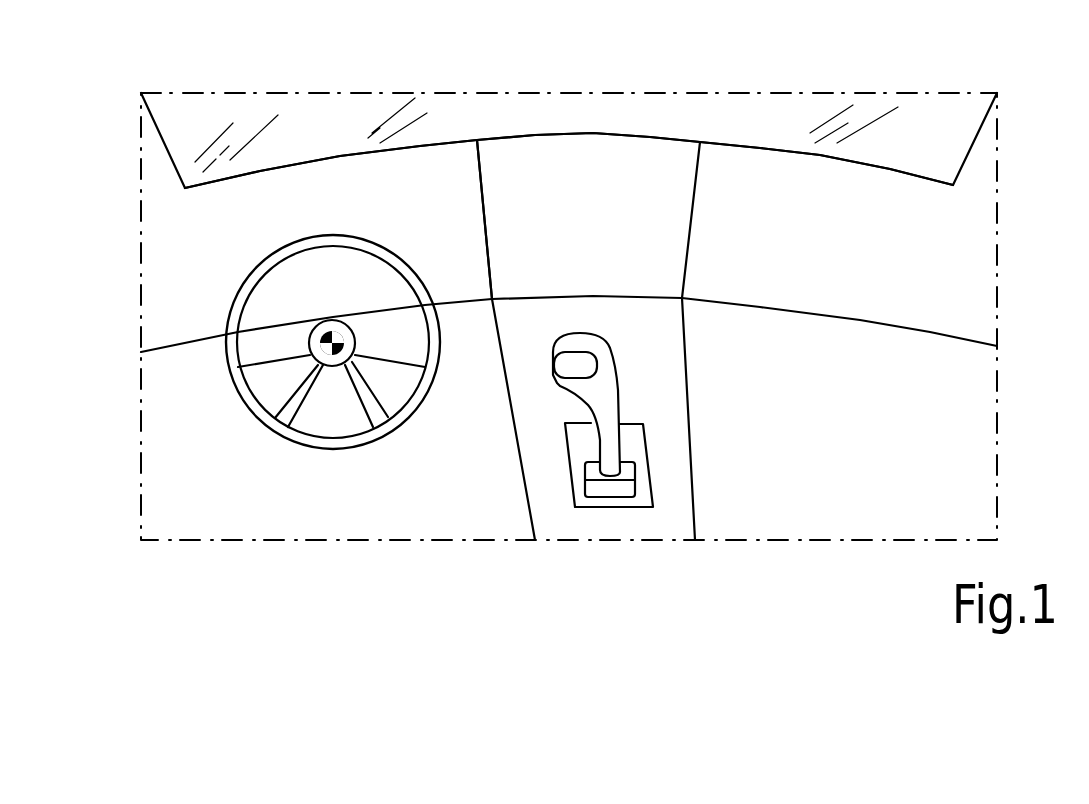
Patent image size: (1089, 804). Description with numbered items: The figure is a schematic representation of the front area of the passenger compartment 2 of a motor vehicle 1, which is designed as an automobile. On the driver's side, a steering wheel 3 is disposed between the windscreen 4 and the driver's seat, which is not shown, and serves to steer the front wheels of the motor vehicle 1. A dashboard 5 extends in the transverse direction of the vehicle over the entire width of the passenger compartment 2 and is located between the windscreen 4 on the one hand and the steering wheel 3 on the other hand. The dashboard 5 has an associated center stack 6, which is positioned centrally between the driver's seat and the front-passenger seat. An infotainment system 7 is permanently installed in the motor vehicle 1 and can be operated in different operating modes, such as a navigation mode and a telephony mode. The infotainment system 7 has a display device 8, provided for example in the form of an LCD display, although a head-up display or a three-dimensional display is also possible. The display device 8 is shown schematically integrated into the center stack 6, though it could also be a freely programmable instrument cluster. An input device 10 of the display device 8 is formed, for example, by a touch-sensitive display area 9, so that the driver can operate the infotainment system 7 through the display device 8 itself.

The motor vehicle 1 is at (988, 168).
The passenger compartment 2 is at (975, 244).
The steering wheel 3 is at (352, 438).
The windscreen 4 is at (282, 107).
The dashboard 5 is at (338, 181).
The center stack 6 is at (538, 133).
The infotainment system 7 is at (725, 222).
The display device 8 is at (490, 169).
The touch-sensitive display area 9 is at (567, 210).
The input device 10 is at (603, 256).